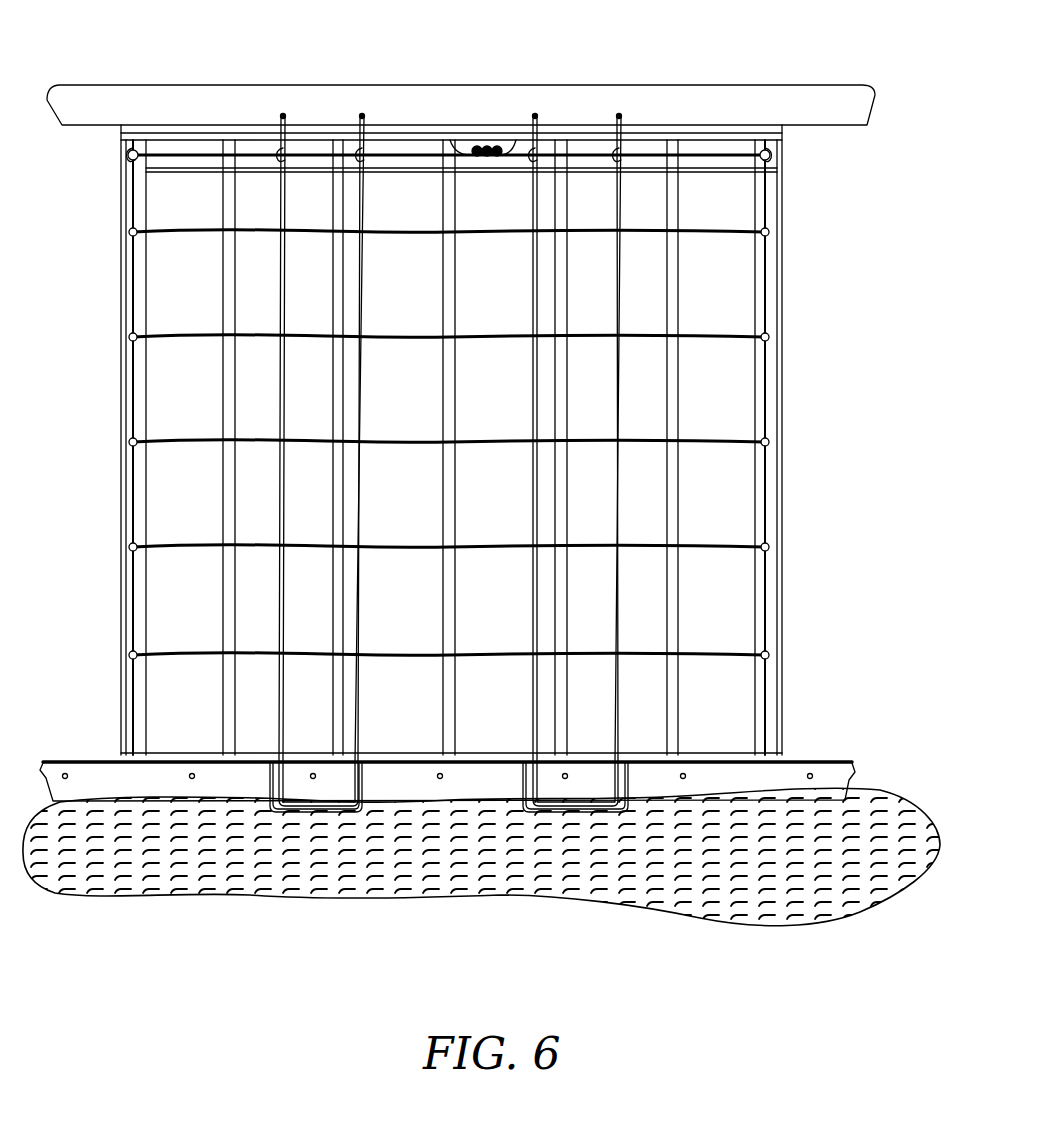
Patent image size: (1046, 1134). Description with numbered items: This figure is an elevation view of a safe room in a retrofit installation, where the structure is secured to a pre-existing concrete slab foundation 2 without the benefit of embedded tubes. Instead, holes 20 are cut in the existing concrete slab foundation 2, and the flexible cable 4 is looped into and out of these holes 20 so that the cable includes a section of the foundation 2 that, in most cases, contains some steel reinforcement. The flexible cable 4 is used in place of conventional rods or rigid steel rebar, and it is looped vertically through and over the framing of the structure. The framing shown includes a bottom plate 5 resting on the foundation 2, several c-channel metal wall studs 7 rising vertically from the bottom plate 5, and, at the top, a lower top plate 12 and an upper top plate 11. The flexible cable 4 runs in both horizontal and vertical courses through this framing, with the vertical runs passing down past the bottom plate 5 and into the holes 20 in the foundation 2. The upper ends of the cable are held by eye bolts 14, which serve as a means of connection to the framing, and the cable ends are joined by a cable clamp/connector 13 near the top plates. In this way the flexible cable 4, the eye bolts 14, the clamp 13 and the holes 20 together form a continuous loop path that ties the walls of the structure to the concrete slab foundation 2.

The concrete slab foundation 2 is at (93, 780).
The flexible cable 4 is at (424, 490).
The bottom plate 5 is at (163, 758).
The c-channel metal wall stud 7 is at (343, 147).
The upper top plate 11 is at (162, 125).
The lower top plate 12 is at (175, 137).
The cable clamp/connector 13 is at (483, 143).
The eye bolt 14 is at (135, 120).
The hole 20 is at (266, 785).